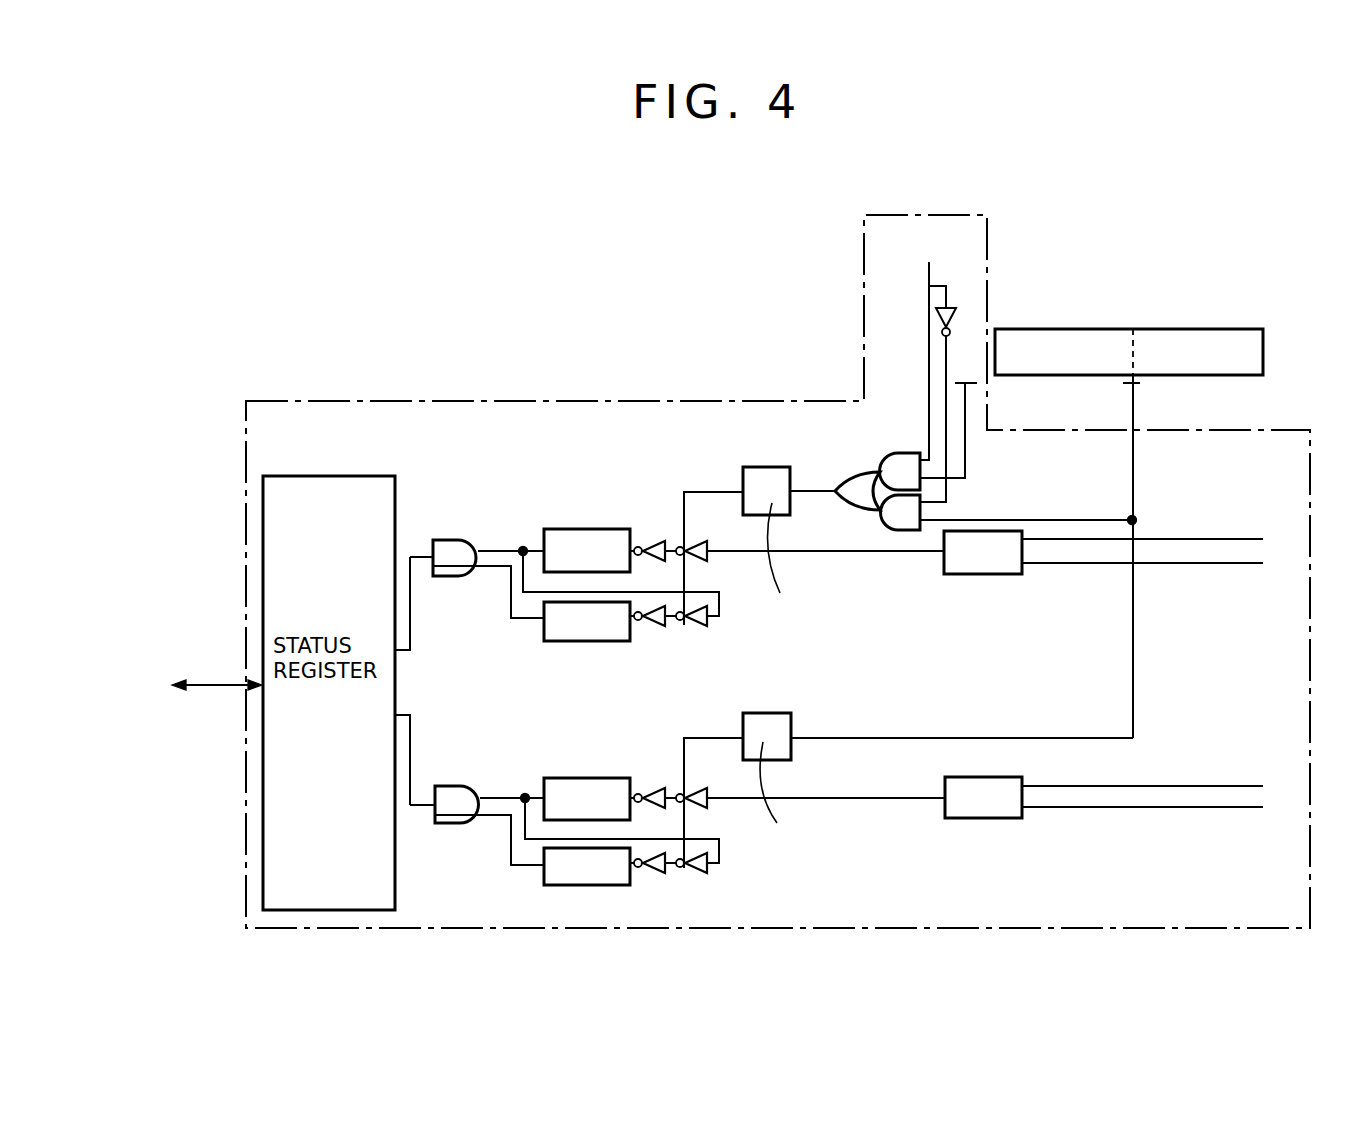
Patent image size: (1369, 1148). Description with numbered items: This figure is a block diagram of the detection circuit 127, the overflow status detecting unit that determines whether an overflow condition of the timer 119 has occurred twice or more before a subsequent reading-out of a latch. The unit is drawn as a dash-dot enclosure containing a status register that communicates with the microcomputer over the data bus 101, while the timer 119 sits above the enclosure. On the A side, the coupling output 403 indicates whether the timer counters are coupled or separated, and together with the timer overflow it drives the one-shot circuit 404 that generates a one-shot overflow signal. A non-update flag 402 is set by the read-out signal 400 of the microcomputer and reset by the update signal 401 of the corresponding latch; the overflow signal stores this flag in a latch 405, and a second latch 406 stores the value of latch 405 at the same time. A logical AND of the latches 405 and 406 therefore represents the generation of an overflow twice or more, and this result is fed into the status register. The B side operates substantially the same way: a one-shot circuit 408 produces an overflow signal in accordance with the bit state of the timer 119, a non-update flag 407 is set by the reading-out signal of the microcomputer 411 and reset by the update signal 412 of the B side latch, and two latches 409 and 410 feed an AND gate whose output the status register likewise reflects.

The data bus 101 is at (218, 682).
The detection circuit 127 is at (482, 401).
The timer 119 is at (1092, 329).
The coupling output 403 is at (948, 254).
The one-shot circuit 404 is at (770, 467).
The latch 405 is at (585, 529).
The latch 406 is at (577, 641).
The read-out signal 400 is at (1190, 537).
The update signal 401 is at (1185, 567).
The non-update flag 402 is at (957, 577).
The non-update flag 407 is at (978, 822).
The one-shot circuit 408 is at (760, 713).
The latch 409 is at (582, 778).
The latch 410 is at (580, 886).
The reading-out signal of the microcomputer 411 is at (1175, 783).
The update signal 412 is at (1165, 812).